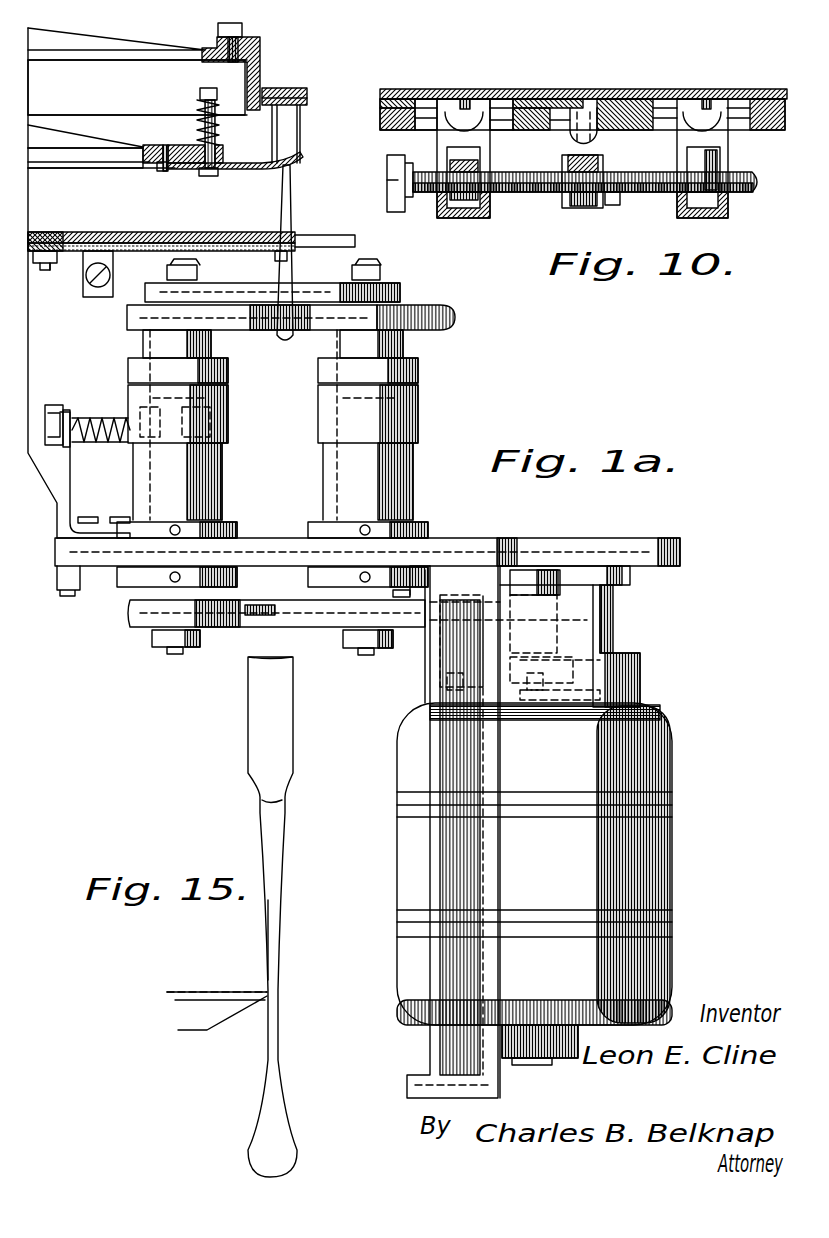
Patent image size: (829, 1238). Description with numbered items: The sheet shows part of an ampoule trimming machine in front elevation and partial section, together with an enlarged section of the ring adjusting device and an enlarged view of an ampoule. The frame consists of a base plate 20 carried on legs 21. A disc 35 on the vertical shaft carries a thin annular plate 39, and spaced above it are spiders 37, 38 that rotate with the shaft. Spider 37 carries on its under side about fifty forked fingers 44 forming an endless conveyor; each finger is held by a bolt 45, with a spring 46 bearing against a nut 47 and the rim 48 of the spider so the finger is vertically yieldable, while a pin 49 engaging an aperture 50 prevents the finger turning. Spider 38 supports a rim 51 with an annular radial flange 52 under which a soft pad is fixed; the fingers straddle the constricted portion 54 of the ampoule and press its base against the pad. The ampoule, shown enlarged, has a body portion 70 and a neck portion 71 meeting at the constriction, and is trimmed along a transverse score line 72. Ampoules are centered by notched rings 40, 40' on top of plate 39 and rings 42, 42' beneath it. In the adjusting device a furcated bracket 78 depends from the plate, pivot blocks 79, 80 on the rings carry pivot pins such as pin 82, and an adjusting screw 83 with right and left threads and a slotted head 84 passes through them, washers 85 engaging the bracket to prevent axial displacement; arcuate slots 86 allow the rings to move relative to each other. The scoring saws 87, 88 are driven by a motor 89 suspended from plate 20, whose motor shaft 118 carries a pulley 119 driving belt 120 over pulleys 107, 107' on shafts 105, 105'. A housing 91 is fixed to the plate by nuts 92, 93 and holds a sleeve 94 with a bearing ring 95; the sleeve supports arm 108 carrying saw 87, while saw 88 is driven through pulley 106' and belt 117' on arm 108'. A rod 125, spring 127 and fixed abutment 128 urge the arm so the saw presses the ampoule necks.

In FIG. 1A, the spider 38 is at (131, 62).
In FIG. 1A, the rim 51 is at (262, 56).
In FIG. 1A, the annular radial flange 52 is at (268, 90).
In FIG. 1A, the nut 47 is at (198, 102).
In FIG. 1A, the spring 46 is at (220, 125).
In FIG. 1A, the rim of the spider 48 is at (178, 145).
In FIG. 1A, the pin 49 is at (160, 167).
In FIG. 1A, the aperture 50 is at (170, 172).
In FIG. 1A, the bolt 45 is at (212, 176).
In FIG. 1A, the forked fingers 44 is at (258, 164).
In FIG. 1A, the spider 37 is at (69, 170).
In FIG. 1A, the constricted portion 54 is at (292, 170).
In FIG. 15, the constricted portion 54 is at (287, 797).
In FIG. 1A, the annular plate 39 is at (156, 234).
In FIG. 10, the annular plate 39 is at (380, 110).
In FIG. 1A, the saw 88 is at (311, 258).
In FIG. 1A, the disc 35 is at (36, 264).
In FIG. 1A, the saw 87 is at (128, 285).
In FIG. 10, the saw 87 is at (490, 151).
In FIG. 15, the saw 87 is at (210, 992).
In FIG. 1A, the belt 117' is at (272, 272).
In FIG. 1A, the pulley 106' is at (412, 280).
In FIG. 1A, the arm 108 is at (218, 324).
In FIG. 1A, the arm 108' is at (438, 336).
In FIG. 1A, the sleeve 94 is at (215, 348).
In FIG. 1A, the bearing ring 95 is at (230, 378).
In FIG. 1A, the housing 91 is at (222, 470).
In FIG. 1A, the nut 92 is at (235, 530).
In FIG. 1A, the nut 93 is at (117, 586).
In FIG. 1A, the base plate 20 is at (636, 560).
In FIG. 1A, the fixed abutment 128 is at (63, 413).
In FIG. 1A, the spring 127 is at (103, 425).
In FIG. 1A, the rod 125 is at (112, 445).
In FIG. 1A, the belt 120 is at (303, 627).
In FIG. 1A, the pulley 107 is at (144, 646).
In FIG. 1A, the shaft 105 is at (178, 666).
In FIG. 1A, the shaft 105' is at (350, 661).
In FIG. 1A, the pulley 107' is at (386, 646).
In FIG. 1A, the legs 21 is at (430, 1060).
In FIG. 1A, the motor shaft 118 is at (533, 573).
In FIG. 1A, the pulley 119 is at (512, 702).
In FIG. 1A, the motor 89 is at (673, 742).
In FIG. 10, the ring 40 is at (583, 95).
In FIG. 10, the ring 40' is at (372, 96).
In FIG. 10, the ring 42 is at (392, 131).
In FIG. 10, the ring 42' is at (449, 128).
In FIG. 10, the arcuate slots 86 is at (503, 108).
In FIG. 10, the pivot block 79 is at (470, 213).
In FIG. 10, the furcated bracket 78 is at (577, 210).
In FIG. 10, the washers 85 is at (592, 153).
In FIG. 10, the adjusting screw 83 is at (637, 190).
In FIG. 10, the pivot block 80 is at (720, 215).
In FIG. 10, the pivot pin 82 is at (720, 158).
In FIG. 10, the slotted head 84 is at (400, 212).
In FIG. 15, the body portion 70 is at (250, 702).
In FIG. 15, the neck portion 71 is at (278, 885).
In FIG. 15, the score line 72 is at (270, 996).